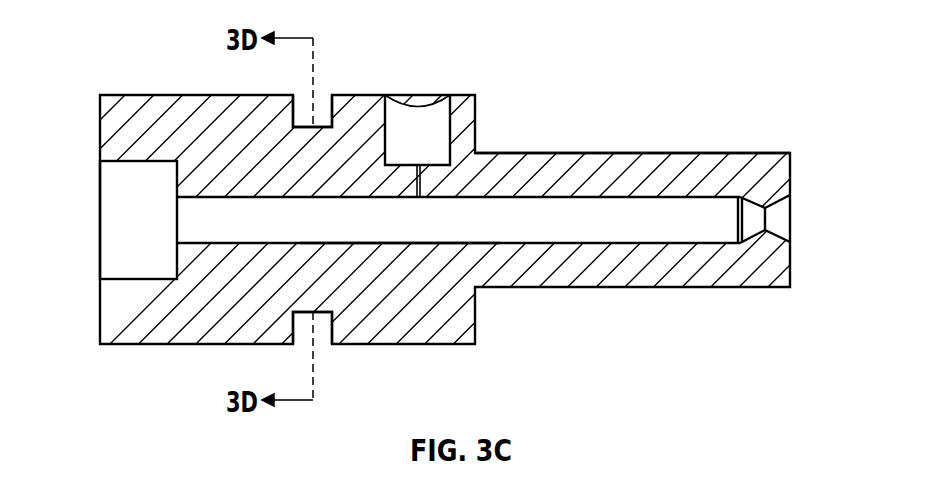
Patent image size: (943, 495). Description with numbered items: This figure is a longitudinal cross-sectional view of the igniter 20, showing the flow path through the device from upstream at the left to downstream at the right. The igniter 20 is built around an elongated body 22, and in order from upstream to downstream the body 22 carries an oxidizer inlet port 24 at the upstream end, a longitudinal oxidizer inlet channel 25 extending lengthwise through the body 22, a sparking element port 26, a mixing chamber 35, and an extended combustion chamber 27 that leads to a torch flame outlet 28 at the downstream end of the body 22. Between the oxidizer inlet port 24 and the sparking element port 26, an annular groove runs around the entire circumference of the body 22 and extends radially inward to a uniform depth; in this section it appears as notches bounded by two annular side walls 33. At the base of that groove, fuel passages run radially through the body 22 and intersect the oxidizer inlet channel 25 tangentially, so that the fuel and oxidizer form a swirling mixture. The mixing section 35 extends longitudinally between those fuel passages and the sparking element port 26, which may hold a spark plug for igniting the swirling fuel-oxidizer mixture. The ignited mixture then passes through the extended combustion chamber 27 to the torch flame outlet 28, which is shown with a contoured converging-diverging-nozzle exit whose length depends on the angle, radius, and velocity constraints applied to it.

The igniter 20 is at (727, 34).
The elongated body 22 is at (667, 288).
The oxidizer inlet port 24 is at (100, 220).
The longitudinal oxidizer inlet channel 25 is at (229, 223).
The sparking element port 26 is at (432, 100).
The extended combustion chamber 27 is at (580, 153).
The torch flame outlet 28 is at (757, 222).
The annular side walls 33 is at (289, 97).
The mixing chamber 35 is at (355, 223).